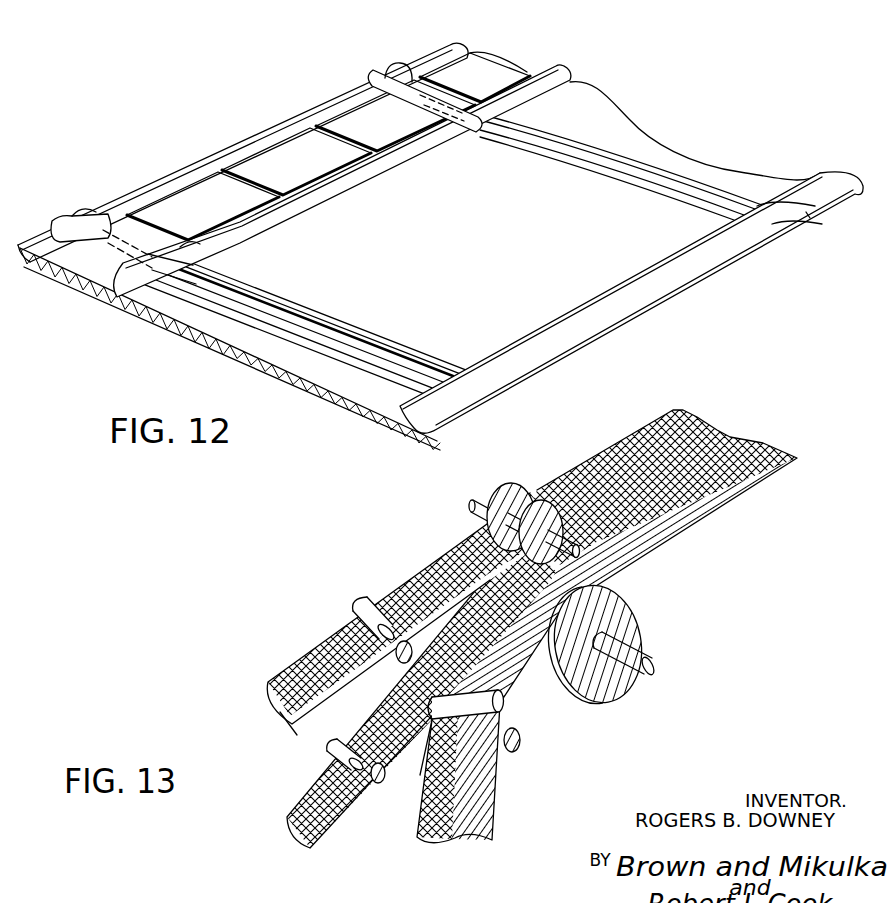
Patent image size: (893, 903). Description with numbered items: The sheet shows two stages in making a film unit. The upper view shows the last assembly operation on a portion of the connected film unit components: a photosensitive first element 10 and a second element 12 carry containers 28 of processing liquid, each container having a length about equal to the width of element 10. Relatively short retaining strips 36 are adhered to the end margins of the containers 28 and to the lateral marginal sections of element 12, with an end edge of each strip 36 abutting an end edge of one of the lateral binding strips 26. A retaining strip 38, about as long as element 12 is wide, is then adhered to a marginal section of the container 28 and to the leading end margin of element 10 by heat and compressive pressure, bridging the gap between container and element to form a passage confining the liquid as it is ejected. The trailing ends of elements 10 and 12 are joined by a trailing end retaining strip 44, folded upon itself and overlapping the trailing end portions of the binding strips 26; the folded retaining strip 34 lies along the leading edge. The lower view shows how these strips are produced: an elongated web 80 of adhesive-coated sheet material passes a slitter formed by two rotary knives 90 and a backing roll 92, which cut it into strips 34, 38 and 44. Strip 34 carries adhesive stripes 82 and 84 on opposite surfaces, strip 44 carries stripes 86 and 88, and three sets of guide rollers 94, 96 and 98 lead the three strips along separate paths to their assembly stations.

In FIG. 12, the first element 10 is at (473, 242).
In FIG. 12, the second element 12 is at (325, 405).
In FIG. 12, the binding strips 26 is at (583, 150).
In FIG. 12, the container 28 is at (291, 160).
In FIG. 12, the retaining strip 34 is at (182, 173).
In FIG. 13, the retaining strip 34 is at (284, 672).
In FIG. 12, the retaining strips 36 is at (120, 240).
In FIG. 12, the retaining strip 38 is at (328, 195).
In FIG. 13, the retaining strip 38 is at (349, 799).
In FIG. 12, the trailing end retaining strip 44 is at (637, 308).
In FIG. 13, the trailing end retaining strip 44 is at (496, 797).
In FIG. 13, the web 80 is at (612, 440).
In FIG. 13, the adhesive stripe 82 is at (308, 653).
In FIG. 13, the adhesive stripe 84 is at (307, 721).
In FIG. 13, the adhesive stripe 86 is at (422, 843).
In FIG. 13, the adhesive stripe 88 is at (470, 830).
In FIG. 13, the rotary knives 90 is at (531, 487).
In FIG. 13, the backing roll 92 is at (640, 610).
In FIG. 13, the guide rollers 94 is at (360, 600).
In FIG. 13, the guide rollers 96 is at (382, 777).
In FIG. 13, the guide rollers 98 is at (521, 741).